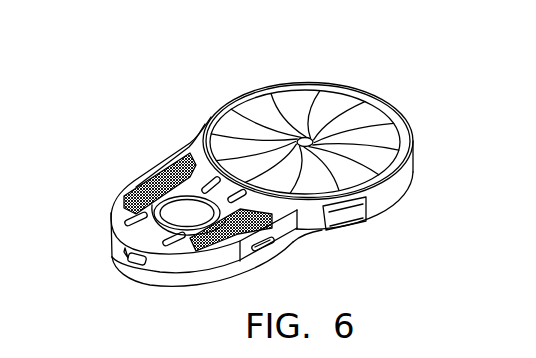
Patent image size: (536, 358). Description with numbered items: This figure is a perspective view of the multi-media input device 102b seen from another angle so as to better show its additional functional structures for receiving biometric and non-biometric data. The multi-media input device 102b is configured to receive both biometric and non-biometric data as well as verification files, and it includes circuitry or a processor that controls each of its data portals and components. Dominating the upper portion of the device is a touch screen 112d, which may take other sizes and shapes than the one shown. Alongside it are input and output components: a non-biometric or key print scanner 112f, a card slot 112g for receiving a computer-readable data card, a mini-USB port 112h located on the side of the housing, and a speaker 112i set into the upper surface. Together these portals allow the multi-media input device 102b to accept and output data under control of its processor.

The multi-media input device 102b is at (331, 52).
The touch screen 112d is at (381, 121).
The key print scanner 112f is at (190, 204).
The card slot 112g is at (350, 222).
The mini-USB port 112h is at (131, 268).
The speaker 112i is at (126, 203).